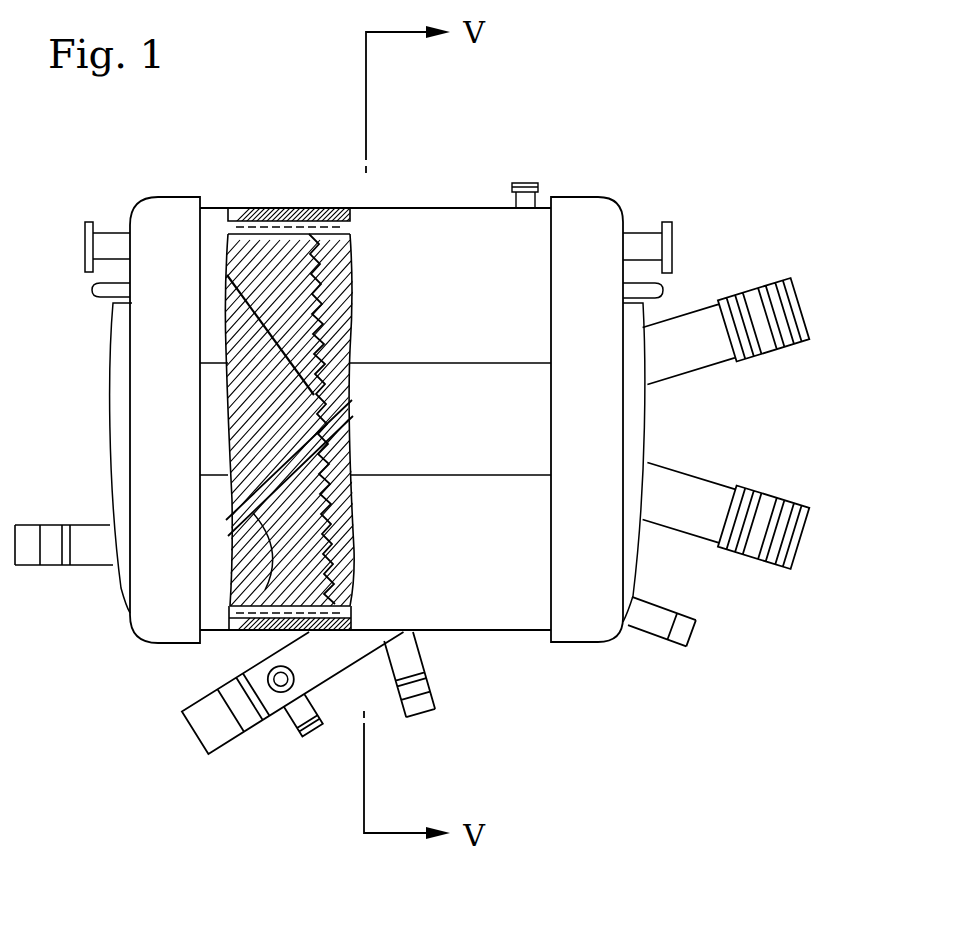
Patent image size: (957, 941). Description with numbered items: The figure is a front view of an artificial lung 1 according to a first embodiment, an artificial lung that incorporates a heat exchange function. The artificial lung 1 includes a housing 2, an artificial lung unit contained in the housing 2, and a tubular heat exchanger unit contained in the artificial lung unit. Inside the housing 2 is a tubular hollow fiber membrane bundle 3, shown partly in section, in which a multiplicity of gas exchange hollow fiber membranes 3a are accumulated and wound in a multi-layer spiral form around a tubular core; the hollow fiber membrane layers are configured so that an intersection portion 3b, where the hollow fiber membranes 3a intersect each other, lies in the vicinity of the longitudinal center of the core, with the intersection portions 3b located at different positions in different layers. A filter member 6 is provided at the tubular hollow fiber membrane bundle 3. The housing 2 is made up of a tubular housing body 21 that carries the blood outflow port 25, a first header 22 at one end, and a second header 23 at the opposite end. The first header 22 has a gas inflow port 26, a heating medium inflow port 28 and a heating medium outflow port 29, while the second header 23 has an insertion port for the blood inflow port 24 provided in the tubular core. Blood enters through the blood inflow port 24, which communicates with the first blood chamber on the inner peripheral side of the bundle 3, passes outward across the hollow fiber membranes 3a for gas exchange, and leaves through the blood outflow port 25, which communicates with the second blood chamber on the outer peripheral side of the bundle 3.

The artificial lung 1 is at (512, 128).
The housing 2 is at (474, 598).
The tubular hollow fiber membrane bundle 3 is at (260, 250).
The hollow fiber membranes 3a is at (240, 624).
The intersection portion 3b is at (300, 224).
The filter member 6 is at (320, 222).
The tubular housing body 21 is at (216, 240).
The first header 22 is at (593, 222).
The second header 23 is at (155, 385).
The blood inflow port 24 is at (28, 557).
The blood outflow port 25 is at (202, 735).
The gas inflow port 26 is at (688, 628).
The heating medium inflow port 28 is at (792, 303).
The heating medium outflow port 29 is at (798, 540).